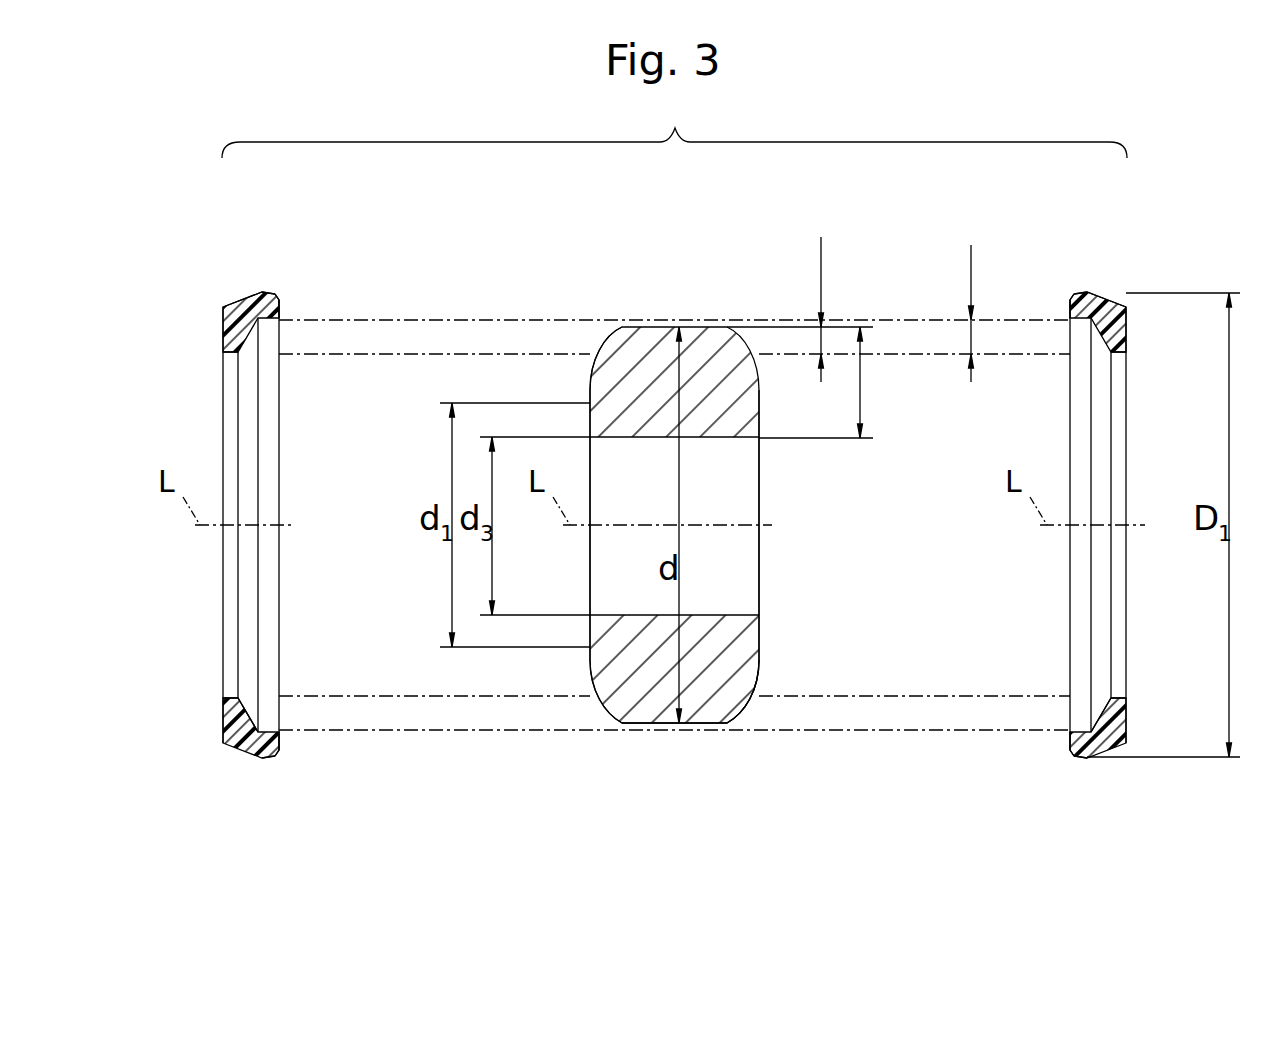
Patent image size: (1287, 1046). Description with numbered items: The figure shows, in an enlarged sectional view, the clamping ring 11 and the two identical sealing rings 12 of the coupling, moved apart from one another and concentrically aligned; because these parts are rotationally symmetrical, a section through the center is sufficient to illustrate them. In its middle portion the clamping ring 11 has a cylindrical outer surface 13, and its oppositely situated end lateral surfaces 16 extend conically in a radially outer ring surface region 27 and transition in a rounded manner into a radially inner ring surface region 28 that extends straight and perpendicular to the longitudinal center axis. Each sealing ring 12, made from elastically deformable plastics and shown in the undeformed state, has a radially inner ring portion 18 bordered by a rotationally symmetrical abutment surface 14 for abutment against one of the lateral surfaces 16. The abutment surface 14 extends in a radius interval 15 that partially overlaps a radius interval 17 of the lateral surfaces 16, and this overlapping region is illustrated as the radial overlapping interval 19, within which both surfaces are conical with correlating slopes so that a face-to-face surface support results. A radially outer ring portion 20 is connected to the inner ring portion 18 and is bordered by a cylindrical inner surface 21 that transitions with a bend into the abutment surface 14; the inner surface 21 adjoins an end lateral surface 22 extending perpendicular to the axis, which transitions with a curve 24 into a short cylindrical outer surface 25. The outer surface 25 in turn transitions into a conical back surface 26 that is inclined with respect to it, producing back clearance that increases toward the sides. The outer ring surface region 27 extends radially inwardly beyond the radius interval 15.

The clamping ring 11 is at (695, 680).
The sealing ring 12 is at (243, 737).
The cylindrical outer surface 13 is at (630, 725).
The abutment surface 14 is at (258, 355).
The radius interval 15 is at (970, 335).
The lateral surface 16 is at (592, 362).
The radius interval 17 is at (861, 383).
The radially inner ring portion 18 is at (238, 722).
The radial overlapping interval 19 is at (821, 340).
The radially outer ring portion 20 is at (268, 742).
The cylindrical inner surface 21 is at (275, 725).
The end lateral surface 22 is at (282, 740).
The curve 24 is at (276, 297).
The cylindrical outer surface 25 is at (256, 292).
The back surface 26 is at (232, 302).
The radially outer ring surface region 27 is at (607, 703).
The radially inner ring surface region 28 is at (588, 420).